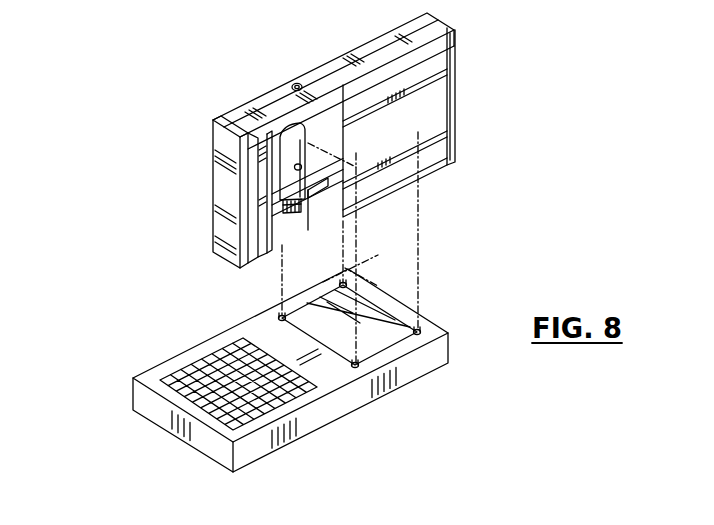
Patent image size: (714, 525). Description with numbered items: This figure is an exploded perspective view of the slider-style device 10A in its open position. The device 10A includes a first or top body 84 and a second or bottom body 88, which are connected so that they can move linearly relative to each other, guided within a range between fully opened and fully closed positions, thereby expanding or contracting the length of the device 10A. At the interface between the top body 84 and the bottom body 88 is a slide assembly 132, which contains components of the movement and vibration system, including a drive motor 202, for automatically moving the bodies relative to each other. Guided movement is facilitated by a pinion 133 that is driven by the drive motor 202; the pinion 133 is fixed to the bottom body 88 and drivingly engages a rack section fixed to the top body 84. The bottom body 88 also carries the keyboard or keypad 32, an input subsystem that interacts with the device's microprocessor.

The slider-style device 10A is at (178, 181).
The top body 84 is at (298, 74).
The slide assembly 132 is at (435, 100).
The drive motor 202 is at (300, 167).
The pinion 133 is at (300, 215).
The bottom body 88 is at (347, 402).
The keyboard or keypad 32 is at (252, 409).